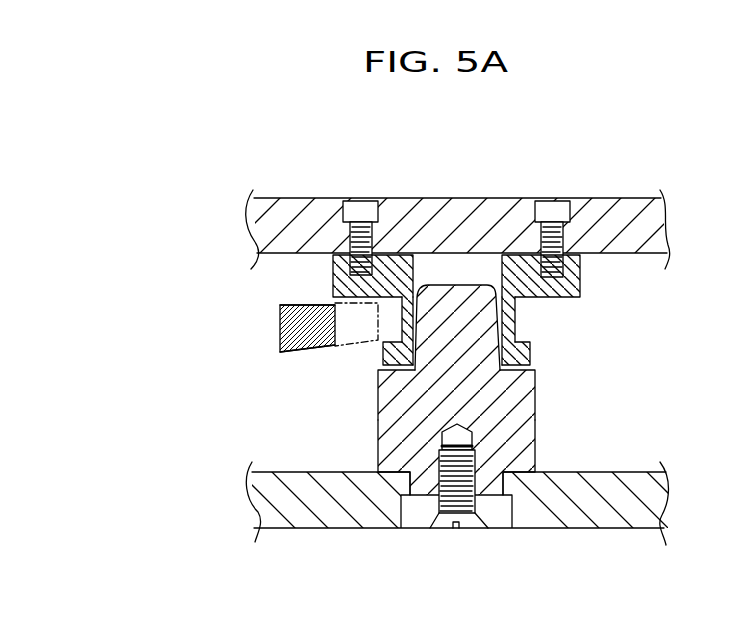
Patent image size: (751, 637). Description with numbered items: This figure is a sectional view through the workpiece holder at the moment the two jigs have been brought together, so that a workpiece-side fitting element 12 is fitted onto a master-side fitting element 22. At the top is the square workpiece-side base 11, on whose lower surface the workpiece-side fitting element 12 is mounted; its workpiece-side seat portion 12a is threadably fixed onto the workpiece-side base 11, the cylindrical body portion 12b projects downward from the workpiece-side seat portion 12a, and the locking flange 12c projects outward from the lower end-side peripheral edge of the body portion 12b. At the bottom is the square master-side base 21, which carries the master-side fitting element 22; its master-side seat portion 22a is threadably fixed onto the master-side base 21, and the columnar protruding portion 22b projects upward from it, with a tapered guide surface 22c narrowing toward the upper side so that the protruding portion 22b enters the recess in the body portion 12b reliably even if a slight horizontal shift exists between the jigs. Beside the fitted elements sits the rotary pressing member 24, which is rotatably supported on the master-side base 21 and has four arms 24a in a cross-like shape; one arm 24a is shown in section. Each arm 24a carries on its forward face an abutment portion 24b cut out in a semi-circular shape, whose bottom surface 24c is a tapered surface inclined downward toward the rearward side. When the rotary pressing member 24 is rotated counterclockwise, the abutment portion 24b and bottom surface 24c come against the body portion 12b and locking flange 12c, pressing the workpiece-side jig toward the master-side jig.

The workpiece-side base 11 is at (631, 198).
The master-side base 21 is at (612, 530).
The workpiece-side fitting element 12 is at (519, 320).
The workpiece-side seat portion 12a is at (580, 291).
The body portion 12b is at (516, 322).
The locking flange 12c is at (531, 351).
The master-side fitting element 22 is at (382, 406).
The master-side seat portion 22a is at (413, 457).
The protruding portion 22b is at (378, 395).
The tapered guide surface 22c is at (404, 321).
The rotary pressing member 24 is at (258, 328).
The arm 24a is at (239, 328).
The abutment portion 24b is at (281, 304).
The bottom surface 24c is at (282, 353).